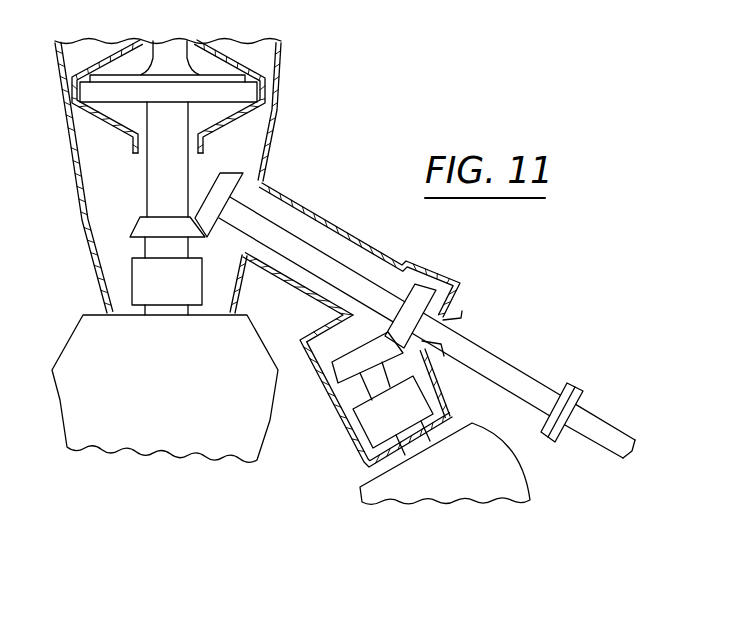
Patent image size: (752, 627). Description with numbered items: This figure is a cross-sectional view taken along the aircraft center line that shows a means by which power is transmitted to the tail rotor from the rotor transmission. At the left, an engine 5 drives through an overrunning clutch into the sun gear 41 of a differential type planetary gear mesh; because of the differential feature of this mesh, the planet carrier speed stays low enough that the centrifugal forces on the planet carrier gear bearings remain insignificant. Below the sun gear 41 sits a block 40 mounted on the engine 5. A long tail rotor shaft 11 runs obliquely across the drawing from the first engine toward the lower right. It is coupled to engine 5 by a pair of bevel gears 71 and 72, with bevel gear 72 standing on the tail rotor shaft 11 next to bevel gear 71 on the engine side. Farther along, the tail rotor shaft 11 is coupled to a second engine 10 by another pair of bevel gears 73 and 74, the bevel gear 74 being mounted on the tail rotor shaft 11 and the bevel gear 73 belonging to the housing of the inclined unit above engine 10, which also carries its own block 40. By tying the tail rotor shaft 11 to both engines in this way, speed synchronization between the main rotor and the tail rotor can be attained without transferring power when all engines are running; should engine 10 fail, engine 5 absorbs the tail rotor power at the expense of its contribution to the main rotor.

The engine 5 is at (63, 425).
The engine 10 is at (517, 469).
The tail rotor shaft 11 is at (512, 367).
The sensor block 40 is at (132, 283).
The sun gear 41 is at (253, 95).
The bevel gear 71 is at (135, 228).
The bevel gear 72 is at (237, 172).
The bevel gear 73 is at (326, 382).
The bevel gear 74 is at (428, 283).